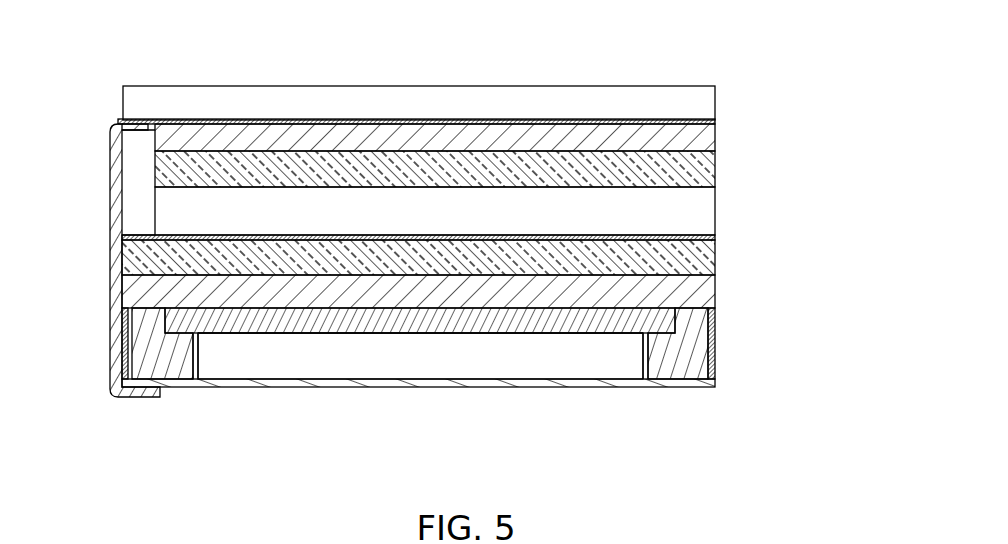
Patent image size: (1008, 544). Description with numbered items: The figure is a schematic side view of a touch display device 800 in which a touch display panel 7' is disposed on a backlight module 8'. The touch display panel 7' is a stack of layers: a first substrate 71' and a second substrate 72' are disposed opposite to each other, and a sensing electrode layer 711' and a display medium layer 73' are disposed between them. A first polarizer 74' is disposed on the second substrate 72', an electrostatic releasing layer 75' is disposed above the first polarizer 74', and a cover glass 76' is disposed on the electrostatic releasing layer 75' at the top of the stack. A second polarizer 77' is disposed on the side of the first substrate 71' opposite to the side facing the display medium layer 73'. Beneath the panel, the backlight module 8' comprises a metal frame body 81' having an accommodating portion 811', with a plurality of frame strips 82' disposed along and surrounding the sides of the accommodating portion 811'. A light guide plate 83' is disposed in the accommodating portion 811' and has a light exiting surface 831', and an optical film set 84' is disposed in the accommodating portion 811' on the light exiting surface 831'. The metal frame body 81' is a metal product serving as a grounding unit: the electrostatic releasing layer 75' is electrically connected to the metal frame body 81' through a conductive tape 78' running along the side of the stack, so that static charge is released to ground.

The display module 800 is at (62, 19).
The conductive tape 78' is at (110, 260).
The touch display panel 7' is at (493, 193).
The cover glass 76' is at (473, 96).
The electrostatic releasing layer 75' is at (471, 114).
The first polarizer 74' is at (473, 137).
The second substrate 72' is at (489, 169).
The display medium layer 73' is at (473, 182).
The sensing electrode layer 711' is at (452, 229).
The first substrate 71' is at (446, 257).
The second polarizer 77' is at (473, 291).
The backlight module 8' is at (441, 400).
The light exiting surface 831' is at (420, 375).
The optical film set 84' is at (420, 380).
The light guide plate 83' is at (420, 388).
The metal frame body 81' is at (418, 411).
The frame strips 82' is at (420, 375).
The accommodating portion 811' is at (437, 375).